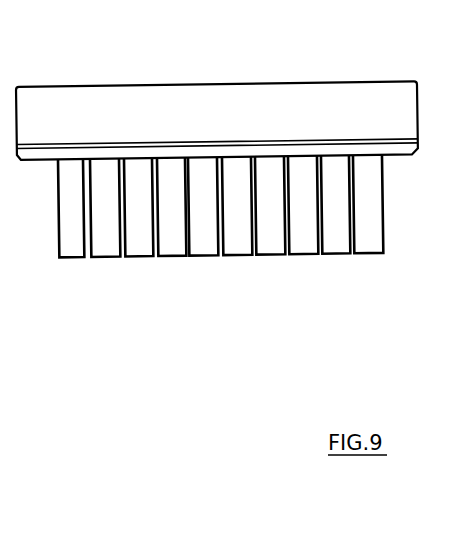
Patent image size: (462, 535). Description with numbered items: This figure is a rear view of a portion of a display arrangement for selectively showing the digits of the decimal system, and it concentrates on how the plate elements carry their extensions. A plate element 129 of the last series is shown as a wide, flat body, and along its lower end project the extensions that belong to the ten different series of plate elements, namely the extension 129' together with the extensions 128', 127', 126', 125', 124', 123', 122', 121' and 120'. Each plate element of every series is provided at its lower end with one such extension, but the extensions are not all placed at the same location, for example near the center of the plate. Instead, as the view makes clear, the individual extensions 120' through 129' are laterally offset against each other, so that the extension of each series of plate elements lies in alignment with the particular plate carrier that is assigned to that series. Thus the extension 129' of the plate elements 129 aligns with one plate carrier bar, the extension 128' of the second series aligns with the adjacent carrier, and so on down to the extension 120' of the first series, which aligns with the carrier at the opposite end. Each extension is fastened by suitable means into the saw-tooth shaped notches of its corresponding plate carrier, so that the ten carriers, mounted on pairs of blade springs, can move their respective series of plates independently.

The plate element 129 is at (216, 98).
The extension 129' is at (74, 237).
The extension 128' is at (110, 257).
The extension 127' is at (142, 236).
The extension 126' is at (176, 258).
The extension 125' is at (207, 234).
The extension 124' is at (241, 257).
The extension 123' is at (274, 234).
The extension 122' is at (308, 256).
The extension 121' is at (338, 233).
The extension 120' is at (372, 255).